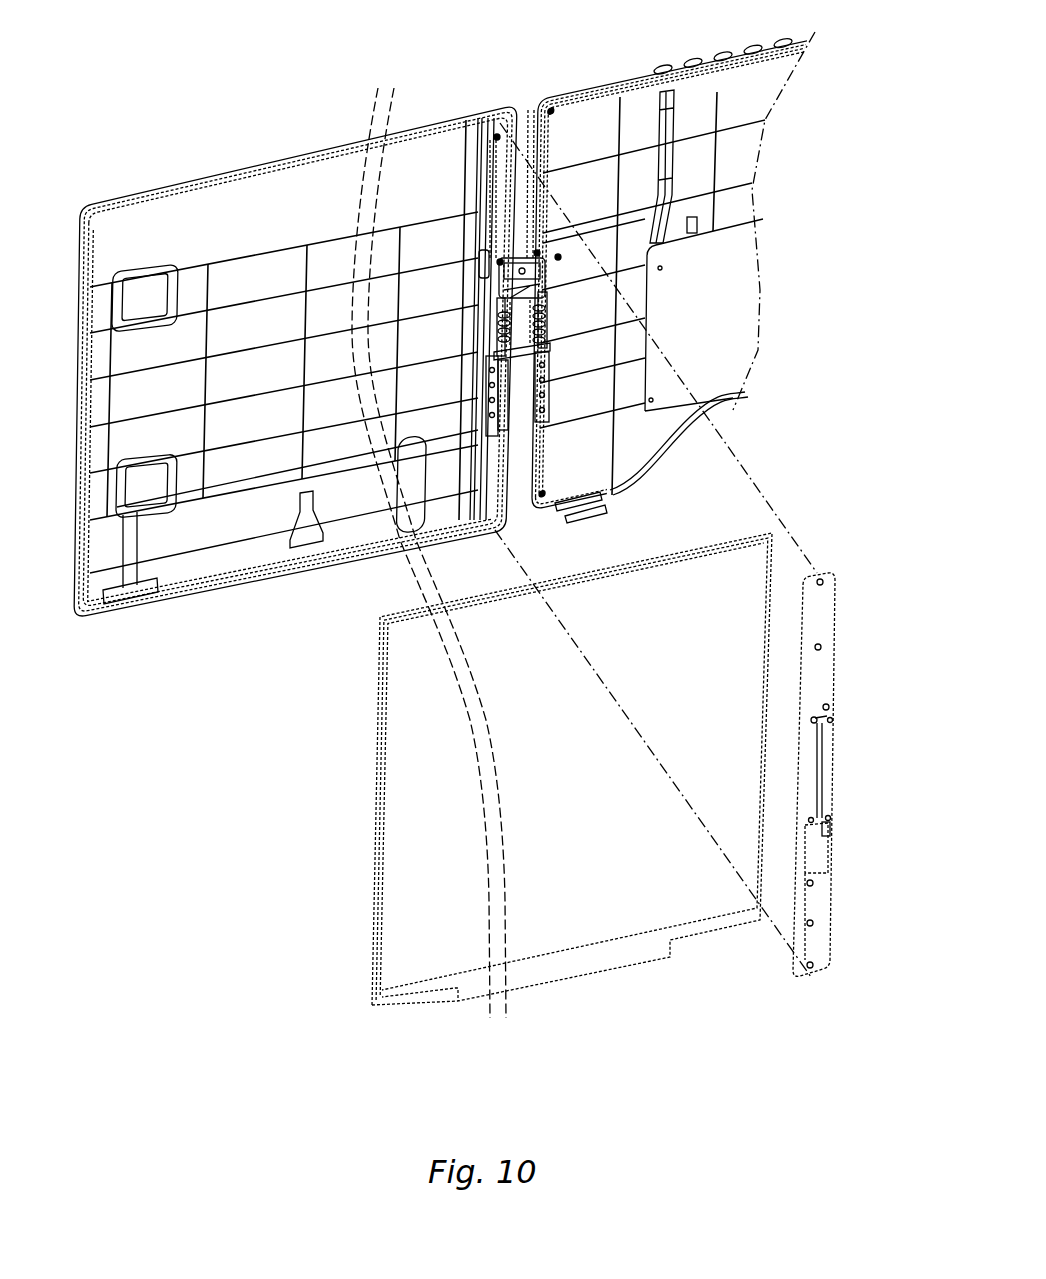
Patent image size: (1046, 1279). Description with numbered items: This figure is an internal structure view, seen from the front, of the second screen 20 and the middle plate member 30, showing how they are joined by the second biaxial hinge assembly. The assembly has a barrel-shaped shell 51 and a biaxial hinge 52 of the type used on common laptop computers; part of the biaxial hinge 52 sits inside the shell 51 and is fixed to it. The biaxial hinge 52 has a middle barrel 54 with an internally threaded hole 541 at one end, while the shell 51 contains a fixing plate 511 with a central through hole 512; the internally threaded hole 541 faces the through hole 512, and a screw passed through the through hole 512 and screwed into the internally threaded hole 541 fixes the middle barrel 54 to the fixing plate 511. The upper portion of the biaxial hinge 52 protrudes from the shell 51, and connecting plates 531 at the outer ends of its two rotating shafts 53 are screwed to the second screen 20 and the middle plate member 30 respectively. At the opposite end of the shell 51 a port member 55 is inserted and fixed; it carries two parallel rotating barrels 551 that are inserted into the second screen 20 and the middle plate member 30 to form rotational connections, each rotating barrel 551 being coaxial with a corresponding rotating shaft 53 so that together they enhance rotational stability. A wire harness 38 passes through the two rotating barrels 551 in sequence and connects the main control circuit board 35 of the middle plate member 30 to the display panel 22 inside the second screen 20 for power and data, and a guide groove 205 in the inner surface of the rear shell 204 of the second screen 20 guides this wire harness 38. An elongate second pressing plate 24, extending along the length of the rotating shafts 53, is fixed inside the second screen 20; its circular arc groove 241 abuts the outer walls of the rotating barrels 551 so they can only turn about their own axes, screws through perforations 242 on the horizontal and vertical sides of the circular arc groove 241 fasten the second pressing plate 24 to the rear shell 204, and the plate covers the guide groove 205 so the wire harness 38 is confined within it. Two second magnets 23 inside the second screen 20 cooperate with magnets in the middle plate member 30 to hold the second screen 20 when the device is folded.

The second screen 20 is at (165, 182).
The rear shell 204 is at (316, 195).
The guide groove 205 is at (482, 260).
The display panel 22 is at (380, 885).
The second magnets 23 is at (162, 305).
The second pressing plate 24 is at (812, 905).
The circular arc groove 241 is at (832, 724).
The perforations 242 is at (813, 716).
The middle plate member 30 is at (598, 82).
The main control circuit board 35 is at (748, 322).
The wire harness 38 is at (693, 216).
The shell 51 is at (497, 320).
The fixing plate 511 is at (494, 300).
The through hole 512 is at (550, 278).
The biaxial hinge 52 is at (492, 352).
The rotating shafts 53 is at (487, 394).
The connecting plates 531 is at (548, 395).
The middle barrel 54 is at (553, 353).
The internally threaded hole 541 is at (553, 324).
The port member 55 is at (503, 247).
The rotating barrels 551 is at (500, 263).